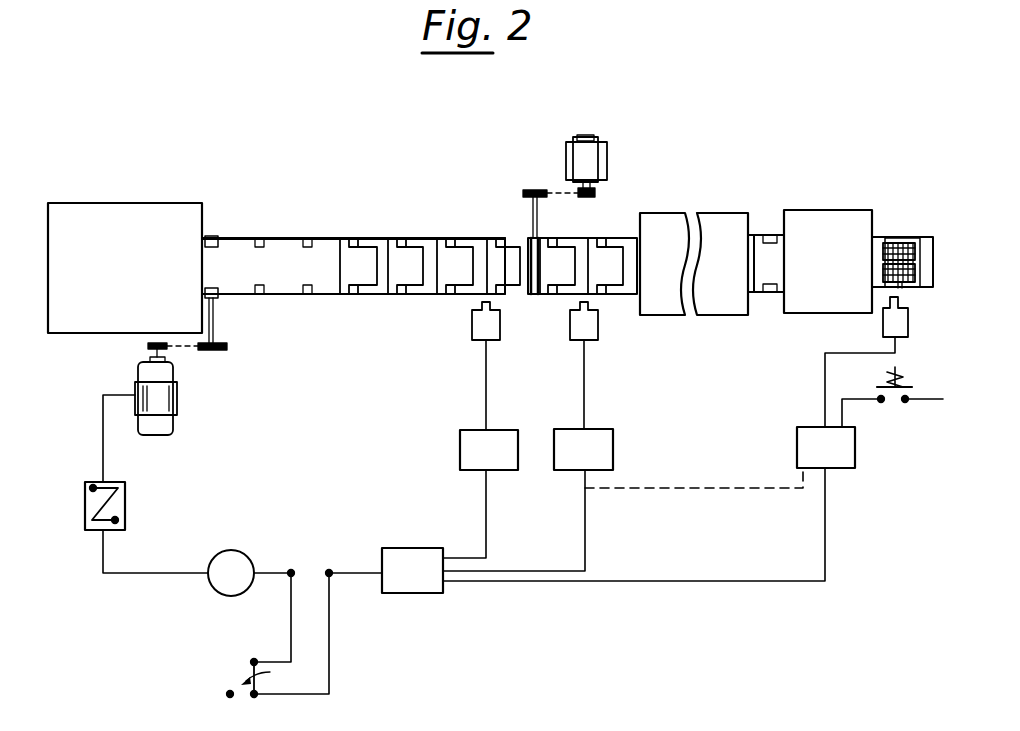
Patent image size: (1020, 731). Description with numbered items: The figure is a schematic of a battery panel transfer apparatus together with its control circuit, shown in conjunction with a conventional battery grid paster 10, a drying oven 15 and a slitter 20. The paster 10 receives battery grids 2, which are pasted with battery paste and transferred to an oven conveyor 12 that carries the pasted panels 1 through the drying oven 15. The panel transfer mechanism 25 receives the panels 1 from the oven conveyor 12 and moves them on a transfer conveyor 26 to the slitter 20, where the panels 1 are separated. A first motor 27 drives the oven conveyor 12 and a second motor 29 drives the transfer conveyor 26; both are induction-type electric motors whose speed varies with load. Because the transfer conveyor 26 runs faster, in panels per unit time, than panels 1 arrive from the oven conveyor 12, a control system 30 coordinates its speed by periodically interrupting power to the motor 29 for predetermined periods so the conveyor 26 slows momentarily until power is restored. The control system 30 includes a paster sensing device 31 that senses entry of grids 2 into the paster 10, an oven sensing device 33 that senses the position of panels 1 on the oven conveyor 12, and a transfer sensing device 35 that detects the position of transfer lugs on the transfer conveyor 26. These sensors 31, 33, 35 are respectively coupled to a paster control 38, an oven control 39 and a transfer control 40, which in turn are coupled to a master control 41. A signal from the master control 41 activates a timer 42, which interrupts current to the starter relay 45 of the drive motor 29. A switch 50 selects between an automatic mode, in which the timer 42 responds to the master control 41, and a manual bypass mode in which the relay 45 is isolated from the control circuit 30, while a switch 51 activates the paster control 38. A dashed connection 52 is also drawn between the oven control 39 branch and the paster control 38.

The pasted panels 1 is at (408, 250).
The battery grids 2 is at (903, 246).
The battery grid paster 10 is at (826, 215).
The oven conveyor 12 is at (750, 237).
The drying oven 15 is at (670, 220).
The slitter 20 is at (149, 213).
The panel transfer mechanism 25 is at (283, 230).
The transfer conveyor 26 is at (330, 240).
The first motor 27 is at (592, 160).
The second motor 29 is at (165, 395).
The control system 30 is at (529, 592).
The paster sensing device 31 is at (895, 322).
The oven sensing device 33 is at (595, 330).
The transfer sensing device 35 is at (470, 328).
The paster control 38 is at (845, 446).
The oven control 39 is at (605, 447).
The transfer control 40 is at (472, 458).
The master control 41 is at (412, 548).
The timer 42 is at (257, 527).
The starter relay 45 is at (125, 498).
The switch 50 is at (245, 707).
The switch 51 is at (912, 381).
The connection line 52 is at (695, 488).